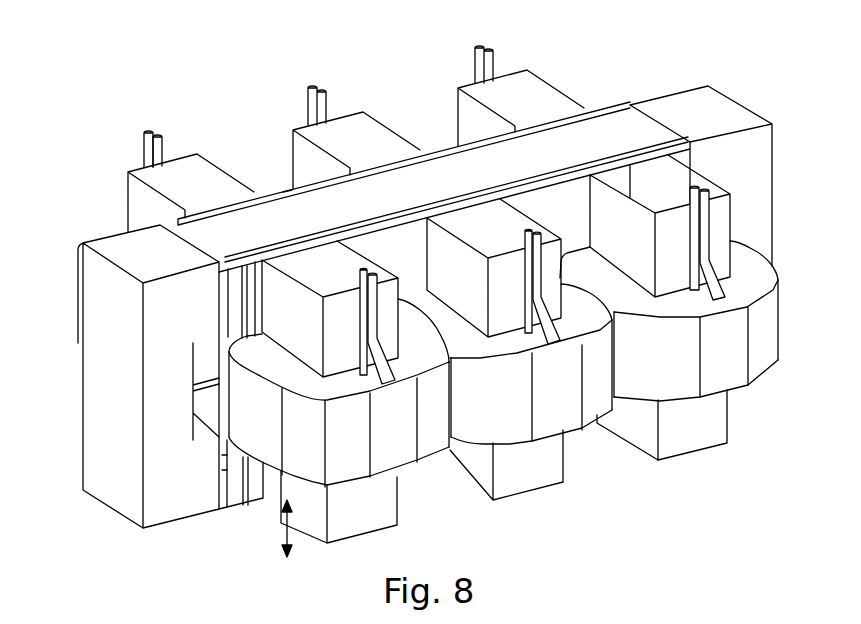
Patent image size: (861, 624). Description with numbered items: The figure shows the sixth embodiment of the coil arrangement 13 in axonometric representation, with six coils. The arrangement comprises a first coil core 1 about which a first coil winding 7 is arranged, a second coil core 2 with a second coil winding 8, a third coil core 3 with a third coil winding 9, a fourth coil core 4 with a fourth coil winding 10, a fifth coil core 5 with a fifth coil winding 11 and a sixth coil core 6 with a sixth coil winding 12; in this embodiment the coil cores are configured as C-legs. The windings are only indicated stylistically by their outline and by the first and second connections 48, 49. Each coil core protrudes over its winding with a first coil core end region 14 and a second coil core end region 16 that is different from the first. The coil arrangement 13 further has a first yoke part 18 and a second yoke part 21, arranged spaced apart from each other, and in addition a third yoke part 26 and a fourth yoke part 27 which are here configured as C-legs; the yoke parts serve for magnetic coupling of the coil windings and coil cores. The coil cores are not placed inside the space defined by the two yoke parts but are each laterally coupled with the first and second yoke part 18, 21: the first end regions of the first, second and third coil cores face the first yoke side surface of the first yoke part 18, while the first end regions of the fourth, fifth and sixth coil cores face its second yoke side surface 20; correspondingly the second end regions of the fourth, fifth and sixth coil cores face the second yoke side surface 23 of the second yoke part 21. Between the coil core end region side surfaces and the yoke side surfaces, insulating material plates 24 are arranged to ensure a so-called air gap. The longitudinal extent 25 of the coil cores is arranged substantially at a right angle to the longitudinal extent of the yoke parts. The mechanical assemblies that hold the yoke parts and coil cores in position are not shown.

The first coil core 1 is at (175, 177).
The second coil core 2 is at (345, 125).
The third coil core 3 is at (522, 88).
The fourth coil core 4 is at (363, 525).
The fifth coil core 5 is at (505, 470).
The sixth coil core 6 is at (697, 428).
The first coil winding 7 is at (113, 230).
The second coil winding 8 is at (287, 190).
The third coil winding 9 is at (452, 147).
The fourth coil winding 10 is at (408, 438).
The fifth coil winding 11 is at (573, 405).
The sixth coil winding 12 is at (760, 322).
The coil arrangement 13 is at (650, 82).
The first coil core end region 14 is at (717, 213).
The second coil core end region 16 is at (695, 415).
The first yoke part 18 is at (642, 137).
The second yoke side surface of the first yoke part 20 is at (233, 310).
The second yoke part 21 is at (233, 478).
The second yoke side surface of the second yoke part 23 is at (230, 492).
The insulating material plate 24 is at (158, 223).
The longitudinal extent 25 is at (283, 540).
The third yoke part 26 is at (93, 283).
The fourth yoke part 27 is at (725, 115).
The first connection 48 is at (150, 128).
The second connection 49 is at (159, 148).